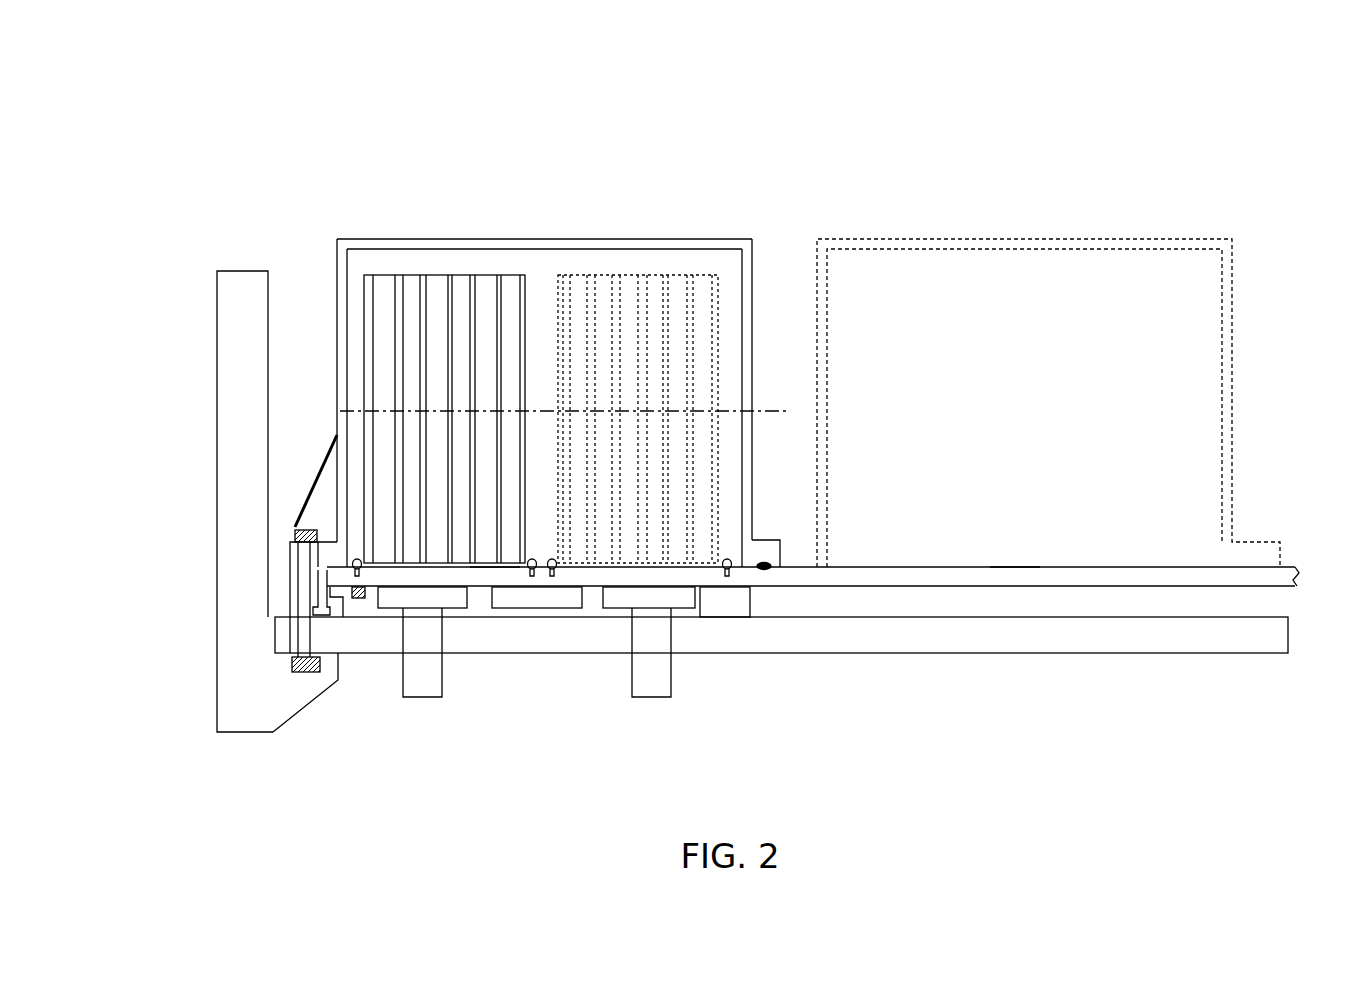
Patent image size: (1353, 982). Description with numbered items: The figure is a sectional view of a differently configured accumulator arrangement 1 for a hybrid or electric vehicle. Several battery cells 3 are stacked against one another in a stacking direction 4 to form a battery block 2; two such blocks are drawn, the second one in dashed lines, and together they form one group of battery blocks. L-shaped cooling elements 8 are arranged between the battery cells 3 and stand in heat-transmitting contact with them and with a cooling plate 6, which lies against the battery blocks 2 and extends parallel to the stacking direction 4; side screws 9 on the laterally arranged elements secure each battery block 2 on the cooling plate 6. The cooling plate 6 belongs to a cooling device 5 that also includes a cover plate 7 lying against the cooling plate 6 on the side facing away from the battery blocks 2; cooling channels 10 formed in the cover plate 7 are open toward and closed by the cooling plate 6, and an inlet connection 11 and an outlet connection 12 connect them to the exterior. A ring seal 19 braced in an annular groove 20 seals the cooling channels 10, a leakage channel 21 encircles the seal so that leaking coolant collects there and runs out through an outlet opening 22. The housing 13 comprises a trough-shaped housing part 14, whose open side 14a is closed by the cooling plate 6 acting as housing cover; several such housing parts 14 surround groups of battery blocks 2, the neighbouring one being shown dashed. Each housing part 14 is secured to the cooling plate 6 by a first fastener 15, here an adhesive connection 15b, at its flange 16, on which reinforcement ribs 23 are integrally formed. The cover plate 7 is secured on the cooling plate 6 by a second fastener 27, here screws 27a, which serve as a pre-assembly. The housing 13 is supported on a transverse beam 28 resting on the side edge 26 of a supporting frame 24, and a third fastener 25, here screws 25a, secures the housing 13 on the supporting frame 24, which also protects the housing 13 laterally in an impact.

The accumulator arrangement 1 is at (1257, 190).
The battery block 2 is at (432, 265).
The battery cell 3 is at (381, 285).
The stacking direction 4 is at (775, 404).
The cooling device 5 is at (734, 626).
The cooling plate 6 is at (912, 566).
The cover plate 7 is at (711, 618).
The cooling element 8 is at (455, 285).
The side screw 9 is at (536, 557).
The cooling channel 10 is at (556, 608).
The inlet connection 11 is at (423, 697).
The outlet connection 12 is at (651, 697).
The housing 13 is at (567, 215).
The housing part 14 is at (497, 240).
The open side 14a is at (495, 580).
The first fastener 15 is at (482, 599).
The adhesive connection 15b is at (292, 538).
The flange 16 is at (310, 530).
The ring seal 19 is at (322, 612).
The annular groove 20 is at (357, 600).
The leakage channel 21 is at (318, 578).
The outlet opening 22 is at (340, 594).
The reinforcement rib 23 is at (320, 470).
The supporting frame 24 is at (241, 262).
The third fastener 25 is at (216, 649).
The screw 25a is at (292, 662).
The side edge 26 is at (325, 690).
The second fastener 27 is at (215, 596).
The screw 27a is at (294, 570).
The transverse beam 28 is at (901, 652).